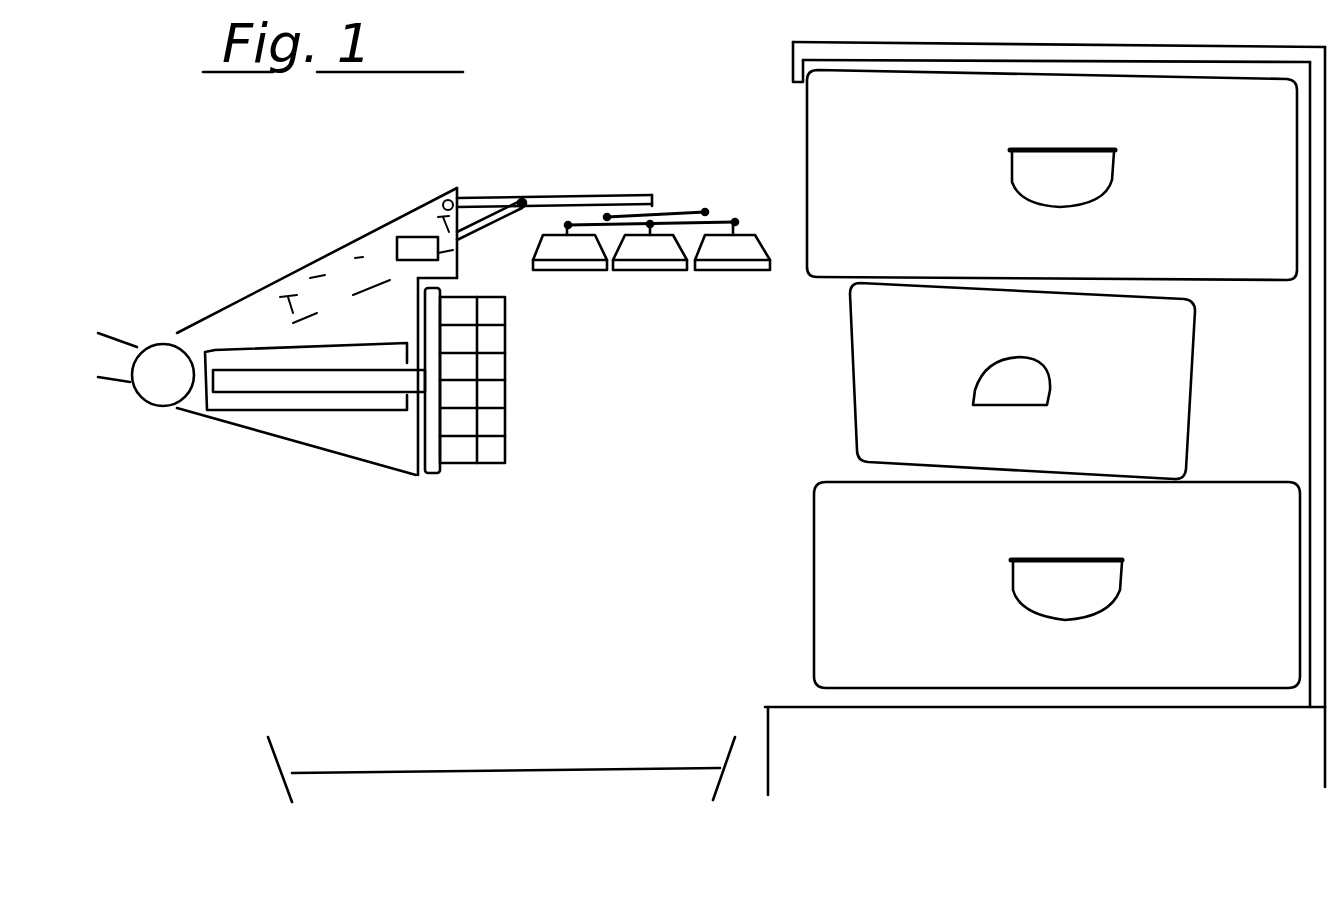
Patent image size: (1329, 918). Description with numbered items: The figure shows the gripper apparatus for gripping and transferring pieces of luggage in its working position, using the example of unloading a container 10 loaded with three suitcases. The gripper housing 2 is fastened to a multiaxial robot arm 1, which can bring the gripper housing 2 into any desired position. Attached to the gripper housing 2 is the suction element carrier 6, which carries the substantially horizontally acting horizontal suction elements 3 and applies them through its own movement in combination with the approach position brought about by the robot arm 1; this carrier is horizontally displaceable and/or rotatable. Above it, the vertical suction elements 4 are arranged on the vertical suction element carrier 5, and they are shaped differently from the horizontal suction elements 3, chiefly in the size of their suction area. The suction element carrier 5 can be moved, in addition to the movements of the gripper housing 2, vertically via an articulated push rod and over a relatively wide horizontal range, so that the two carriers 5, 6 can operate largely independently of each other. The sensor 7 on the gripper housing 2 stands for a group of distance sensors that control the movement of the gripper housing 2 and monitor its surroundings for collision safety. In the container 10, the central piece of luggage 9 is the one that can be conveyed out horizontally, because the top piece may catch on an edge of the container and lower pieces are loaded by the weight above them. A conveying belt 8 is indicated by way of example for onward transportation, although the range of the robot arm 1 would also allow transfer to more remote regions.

The multiaxial robot arm 1 is at (118, 337).
The gripper housing 2 is at (328, 443).
The horizontal suction elements 3 is at (505, 333).
The vertical suction elements 4 is at (673, 223).
The vertical suction element carrier 5 is at (547, 197).
The suction element carrier 6 is at (433, 442).
The sensor 7 is at (423, 243).
The conveying belt 8 is at (453, 768).
The piece of luggage 9 is at (820, 585).
The container 10 is at (781, 701).